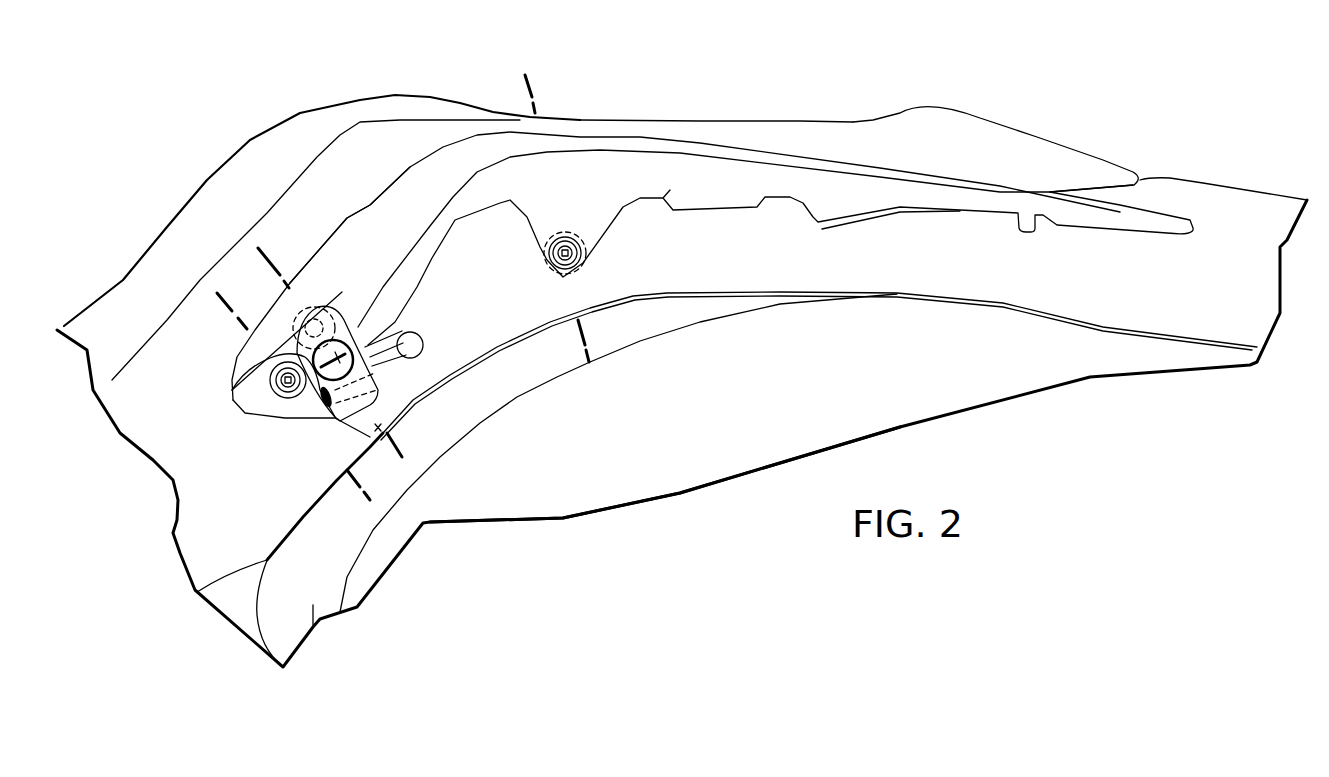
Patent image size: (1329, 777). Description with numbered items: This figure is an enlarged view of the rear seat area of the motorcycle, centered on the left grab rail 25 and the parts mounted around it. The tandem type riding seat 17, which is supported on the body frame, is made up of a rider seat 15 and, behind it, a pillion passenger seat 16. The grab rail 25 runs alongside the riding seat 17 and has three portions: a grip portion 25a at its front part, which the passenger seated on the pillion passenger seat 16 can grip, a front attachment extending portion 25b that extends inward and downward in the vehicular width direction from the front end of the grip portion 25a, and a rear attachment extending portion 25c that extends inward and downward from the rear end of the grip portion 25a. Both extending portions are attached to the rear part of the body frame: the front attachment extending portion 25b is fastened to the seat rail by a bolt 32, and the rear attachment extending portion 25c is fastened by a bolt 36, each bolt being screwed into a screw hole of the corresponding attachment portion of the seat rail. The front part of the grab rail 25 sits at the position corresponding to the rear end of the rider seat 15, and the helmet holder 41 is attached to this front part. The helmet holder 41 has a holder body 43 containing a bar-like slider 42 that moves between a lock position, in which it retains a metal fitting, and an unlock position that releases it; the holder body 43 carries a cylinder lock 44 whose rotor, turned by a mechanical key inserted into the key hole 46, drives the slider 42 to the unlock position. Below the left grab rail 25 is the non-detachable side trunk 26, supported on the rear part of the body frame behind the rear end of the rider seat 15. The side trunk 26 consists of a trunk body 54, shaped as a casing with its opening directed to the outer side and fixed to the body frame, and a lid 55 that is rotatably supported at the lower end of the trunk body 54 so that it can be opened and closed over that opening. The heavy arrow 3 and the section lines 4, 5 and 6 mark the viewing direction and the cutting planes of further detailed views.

The section line III 3 is at (292, 193).
The section line IV 4 is at (214, 308).
The section line V 5 is at (516, 85).
The section line VI 6 is at (298, 228).
The rider seat 15 is at (162, 267).
The pillion passenger seat 16 is at (845, 137).
The riding seat 17 is at (733, 112).
The grab rail 25 is at (639, 130).
The grip portion 25a is at (375, 211).
The front attachment extending portion 25b is at (273, 420).
The rear attachment extending portion 25c is at (595, 230).
The side trunk 26 is at (782, 410).
The bolt 32 is at (270, 408).
The bolt 36 is at (623, 208).
The helmet holder 41 is at (406, 378).
The slider 42 is at (383, 350).
The holder body 43 is at (411, 348).
The cylinder lock 44 is at (322, 333).
The key hole 46 is at (343, 400).
The trunk body 54 is at (313, 627).
The lid 55 is at (913, 320).